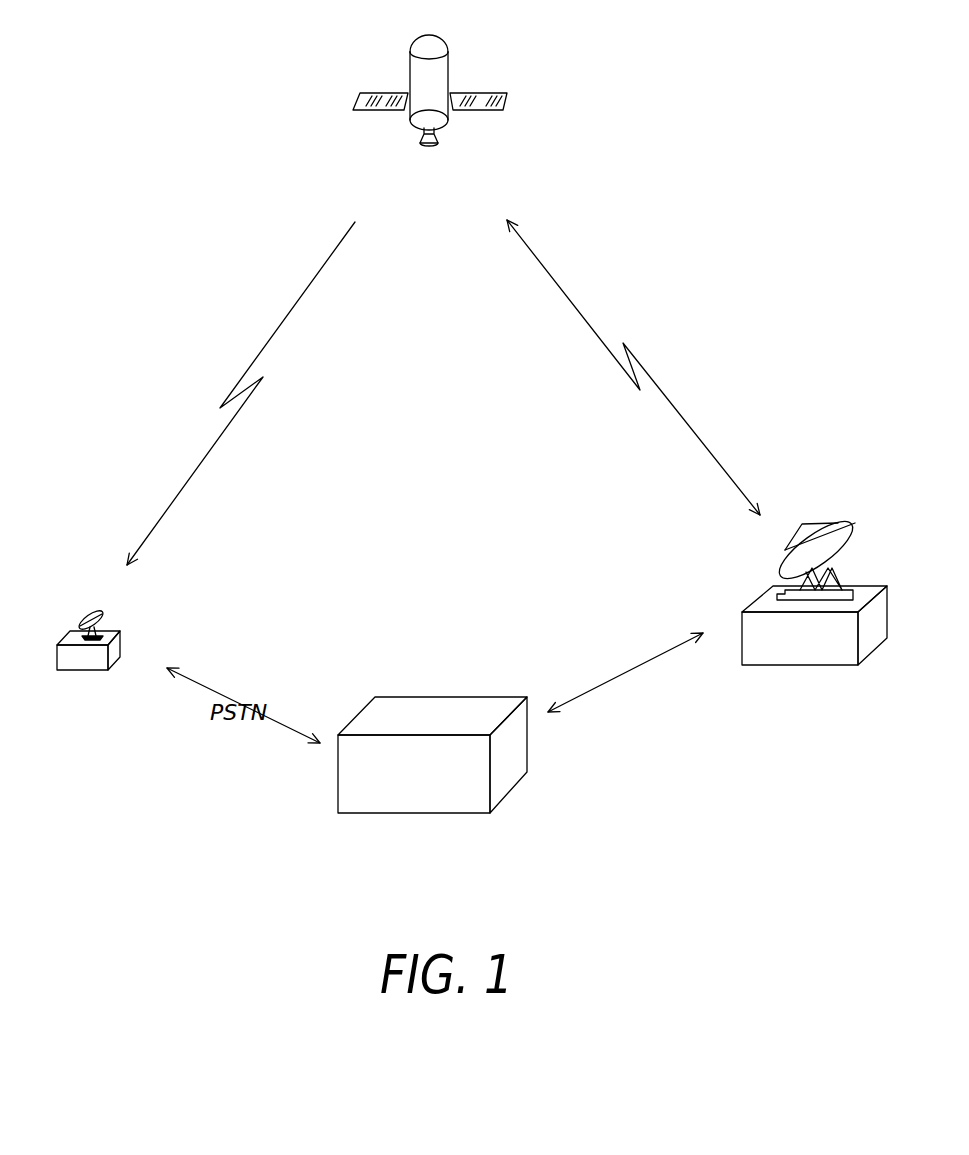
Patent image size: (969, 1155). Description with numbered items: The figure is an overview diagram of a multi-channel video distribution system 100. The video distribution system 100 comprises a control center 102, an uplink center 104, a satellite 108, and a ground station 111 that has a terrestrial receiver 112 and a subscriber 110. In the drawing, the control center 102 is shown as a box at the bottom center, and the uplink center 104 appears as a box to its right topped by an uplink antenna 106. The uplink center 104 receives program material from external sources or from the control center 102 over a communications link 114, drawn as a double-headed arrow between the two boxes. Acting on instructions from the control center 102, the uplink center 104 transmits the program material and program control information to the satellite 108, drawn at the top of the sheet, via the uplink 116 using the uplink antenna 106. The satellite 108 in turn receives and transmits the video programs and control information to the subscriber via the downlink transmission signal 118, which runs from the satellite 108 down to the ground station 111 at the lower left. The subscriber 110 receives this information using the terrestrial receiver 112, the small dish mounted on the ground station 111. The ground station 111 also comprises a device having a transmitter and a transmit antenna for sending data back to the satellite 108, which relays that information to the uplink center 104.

The multi-channel video distribution system 100 is at (738, 228).
The control center 102 is at (510, 793).
The uplink center 104 is at (797, 665).
The uplink antenna 106 is at (852, 533).
The satellite 108 is at (477, 108).
The subscriber 110 is at (121, 629).
The ground station 111 is at (87, 680).
The terrestrial receiver 112 is at (90, 613).
The communications link 114 is at (622, 670).
The uplink 116 is at (677, 407).
The downlink transmission signal 118 is at (290, 313).